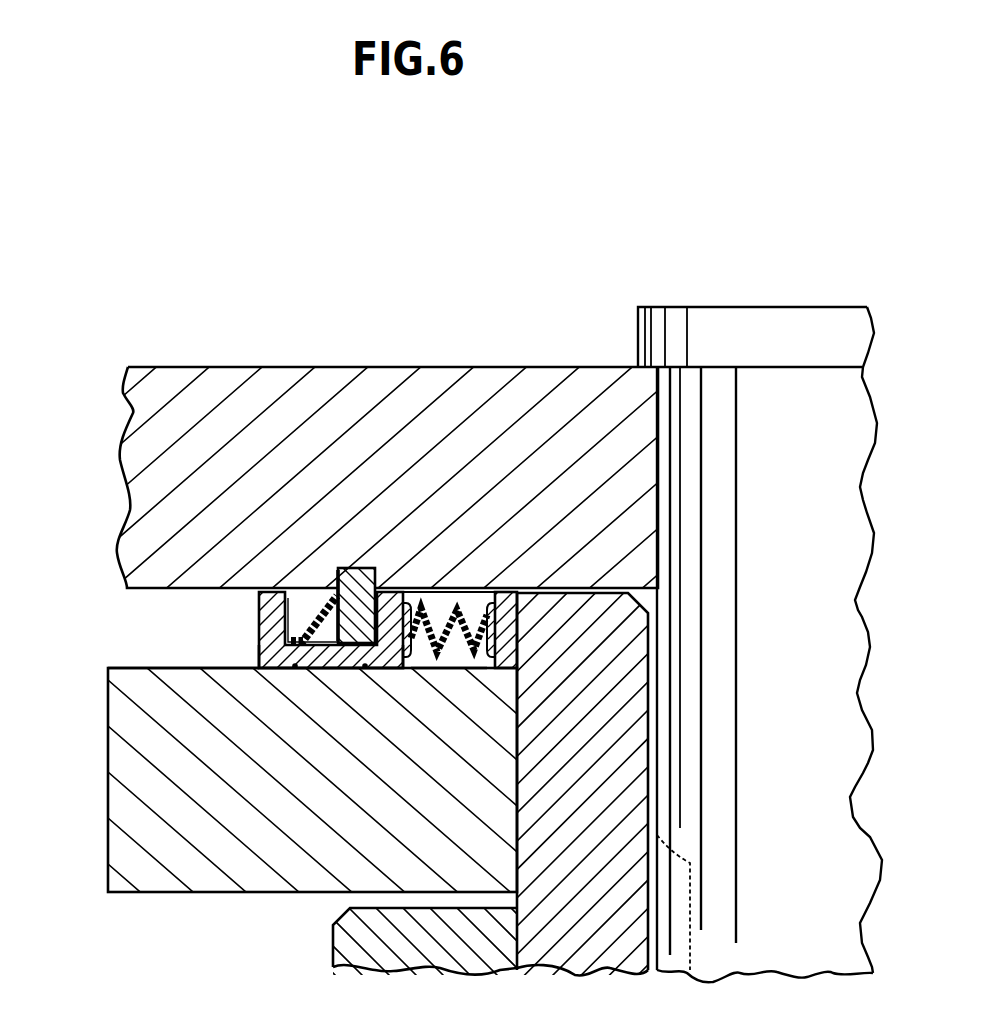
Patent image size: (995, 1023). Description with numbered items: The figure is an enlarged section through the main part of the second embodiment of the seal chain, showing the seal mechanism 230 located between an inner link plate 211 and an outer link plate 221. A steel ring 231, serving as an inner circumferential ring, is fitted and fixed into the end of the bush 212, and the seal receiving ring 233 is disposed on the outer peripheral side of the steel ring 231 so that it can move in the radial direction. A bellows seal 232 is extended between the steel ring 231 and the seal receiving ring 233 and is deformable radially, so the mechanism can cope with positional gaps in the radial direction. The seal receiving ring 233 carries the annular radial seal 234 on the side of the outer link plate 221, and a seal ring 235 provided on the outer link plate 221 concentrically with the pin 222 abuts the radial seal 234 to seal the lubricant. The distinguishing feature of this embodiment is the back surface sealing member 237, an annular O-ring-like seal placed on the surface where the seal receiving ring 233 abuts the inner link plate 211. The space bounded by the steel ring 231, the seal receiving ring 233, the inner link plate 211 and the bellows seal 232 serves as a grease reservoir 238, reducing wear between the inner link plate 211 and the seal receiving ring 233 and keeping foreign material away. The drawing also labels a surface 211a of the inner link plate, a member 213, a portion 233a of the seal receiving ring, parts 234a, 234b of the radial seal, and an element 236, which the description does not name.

The inner link plate 211 is at (128, 789).
The upper surface of rotating ring 211a is at (167, 667).
The bush 212 is at (582, 962).
The lower support member 213 is at (467, 960).
The outer link plate 221 is at (415, 378).
The pin 222 is at (778, 328).
The seal mechanism 230 is at (232, 618).
The steel ring 231 is at (512, 655).
The bellows seal 232 is at (440, 645).
The seal receiving ring 233 is at (258, 668).
The bottom wall of holder 233a is at (313, 668).
The radial seal 234 is at (122, 328).
The inclined spring 234a is at (320, 600).
The thin seal plate 234b is at (300, 600).
The seal ring 235 is at (363, 567).
The spring end caps 236 is at (490, 590).
The back surface sealing member 237 is at (365, 665).
The grease reservoir 238 is at (460, 657).